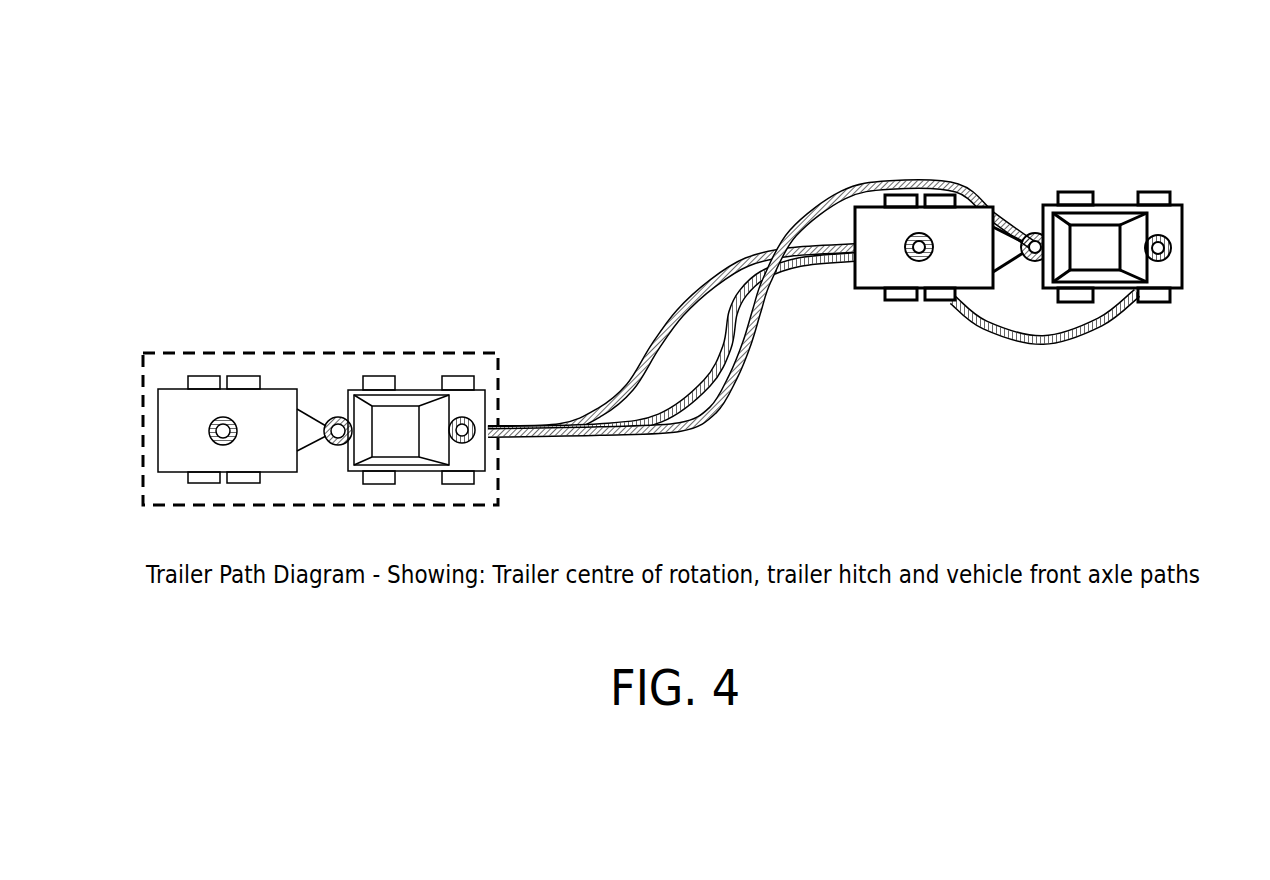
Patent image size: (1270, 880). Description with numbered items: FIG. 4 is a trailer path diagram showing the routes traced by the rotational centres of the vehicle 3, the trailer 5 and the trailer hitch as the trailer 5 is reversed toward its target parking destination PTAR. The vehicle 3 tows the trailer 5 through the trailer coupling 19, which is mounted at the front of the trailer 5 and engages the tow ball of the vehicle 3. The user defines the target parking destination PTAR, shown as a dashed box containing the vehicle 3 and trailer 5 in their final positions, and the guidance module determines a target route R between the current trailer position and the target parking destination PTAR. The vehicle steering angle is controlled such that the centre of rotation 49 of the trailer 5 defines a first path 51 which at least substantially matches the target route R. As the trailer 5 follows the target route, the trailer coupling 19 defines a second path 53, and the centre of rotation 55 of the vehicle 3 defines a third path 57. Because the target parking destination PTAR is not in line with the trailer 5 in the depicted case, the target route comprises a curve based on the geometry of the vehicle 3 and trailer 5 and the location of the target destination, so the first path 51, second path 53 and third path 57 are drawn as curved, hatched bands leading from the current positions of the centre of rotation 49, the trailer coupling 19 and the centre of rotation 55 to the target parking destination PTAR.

The vehicle 3 is at (1147, 229).
The trailer 5 is at (949, 229).
The trailer coupling 19 is at (1033, 250).
The centre of rotation of the trailer 49 is at (920, 250).
The first path 51 is at (728, 343).
The second path 53 is at (813, 208).
The centre of rotation of the vehicle 55 is at (1159, 250).
The third path 57 is at (673, 327).
The target parking destination PTAR is at (302, 337).